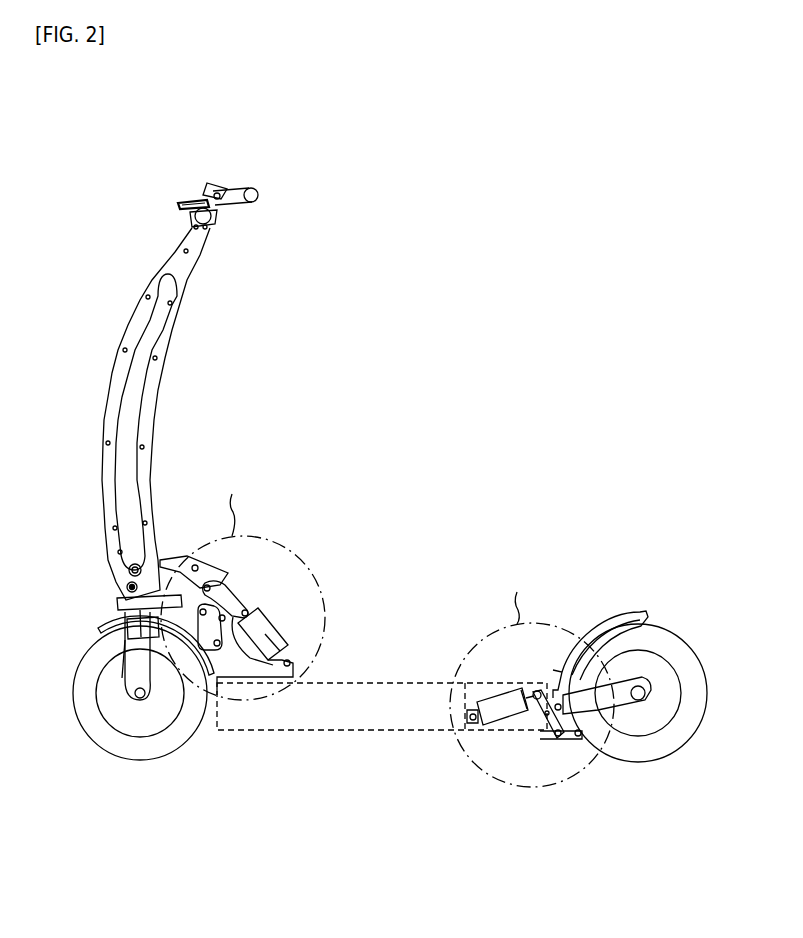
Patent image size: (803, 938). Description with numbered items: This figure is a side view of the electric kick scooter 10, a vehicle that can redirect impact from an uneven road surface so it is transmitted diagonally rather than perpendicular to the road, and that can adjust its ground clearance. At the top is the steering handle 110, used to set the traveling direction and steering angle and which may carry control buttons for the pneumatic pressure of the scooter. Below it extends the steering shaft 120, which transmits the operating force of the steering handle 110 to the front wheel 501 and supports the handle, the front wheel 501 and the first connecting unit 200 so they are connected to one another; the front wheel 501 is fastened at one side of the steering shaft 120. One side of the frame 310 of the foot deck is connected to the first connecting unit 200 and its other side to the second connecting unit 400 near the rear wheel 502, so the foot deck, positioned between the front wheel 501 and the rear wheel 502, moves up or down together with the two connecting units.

The electric kick scooter 10 is at (500, 123).
The steering handle 110 is at (208, 183).
The steering shaft 120 is at (152, 403).
The first connecting unit 200 is at (277, 532).
The frame 310 is at (372, 683).
The second connecting unit 400 is at (554, 624).
The front wheel 501 is at (140, 762).
The rear wheel 502 is at (648, 763).